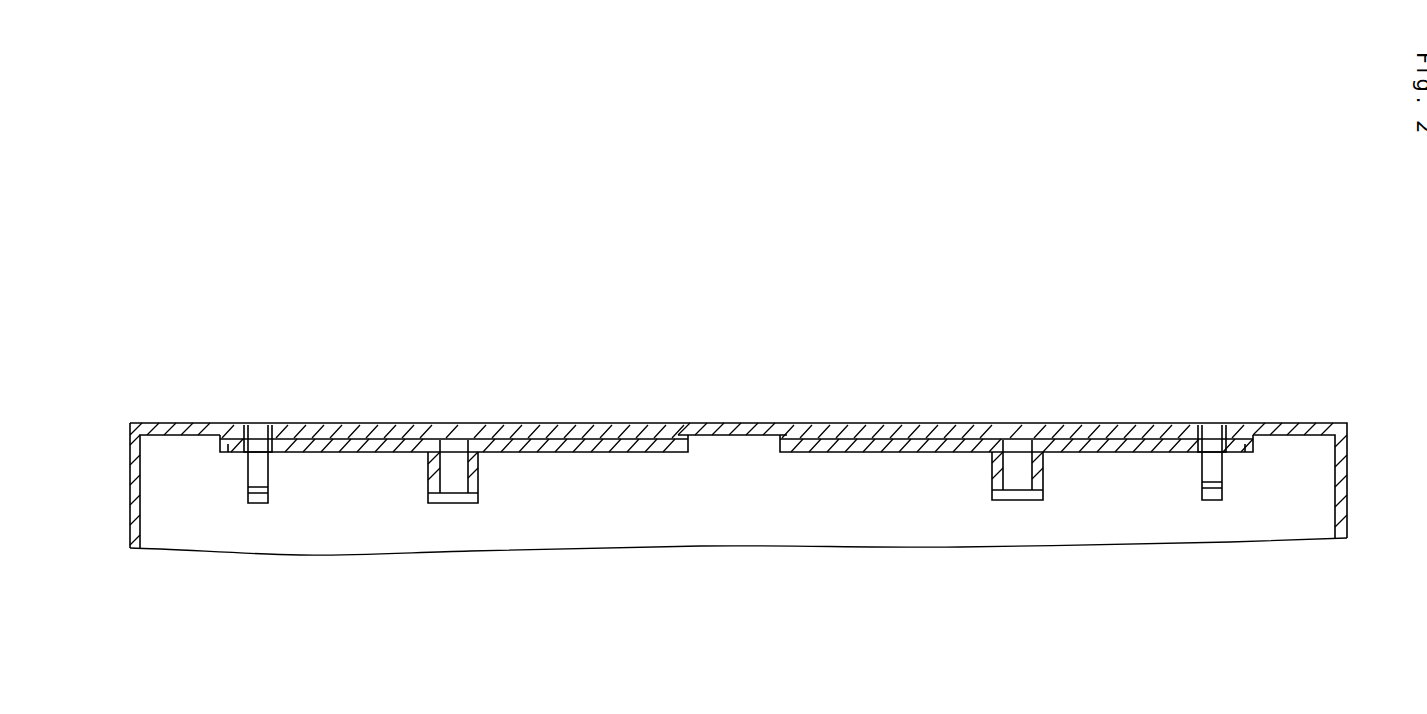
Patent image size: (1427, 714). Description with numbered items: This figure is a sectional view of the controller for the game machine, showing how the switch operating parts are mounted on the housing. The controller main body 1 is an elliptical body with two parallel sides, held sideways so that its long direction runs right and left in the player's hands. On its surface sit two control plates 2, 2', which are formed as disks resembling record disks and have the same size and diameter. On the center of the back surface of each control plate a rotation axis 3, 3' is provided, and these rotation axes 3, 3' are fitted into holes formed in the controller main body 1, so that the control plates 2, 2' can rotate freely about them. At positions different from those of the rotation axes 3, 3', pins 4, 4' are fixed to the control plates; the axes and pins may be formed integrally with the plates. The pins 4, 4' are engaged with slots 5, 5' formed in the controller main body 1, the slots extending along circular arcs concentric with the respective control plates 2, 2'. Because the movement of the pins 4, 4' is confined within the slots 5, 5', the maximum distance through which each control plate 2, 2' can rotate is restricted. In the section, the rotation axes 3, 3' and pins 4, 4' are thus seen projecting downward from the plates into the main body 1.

The controller main body 1 is at (746, 423).
The control plate 2 is at (454, 378).
The control plate 2' is at (1016, 375).
The rotation axis 3 is at (453, 552).
The rotation axis 3' is at (1017, 552).
The pin 4 is at (257, 544).
The pin 4' is at (1219, 545).
The slot 5 is at (263, 378).
The slot 5' is at (1198, 375).